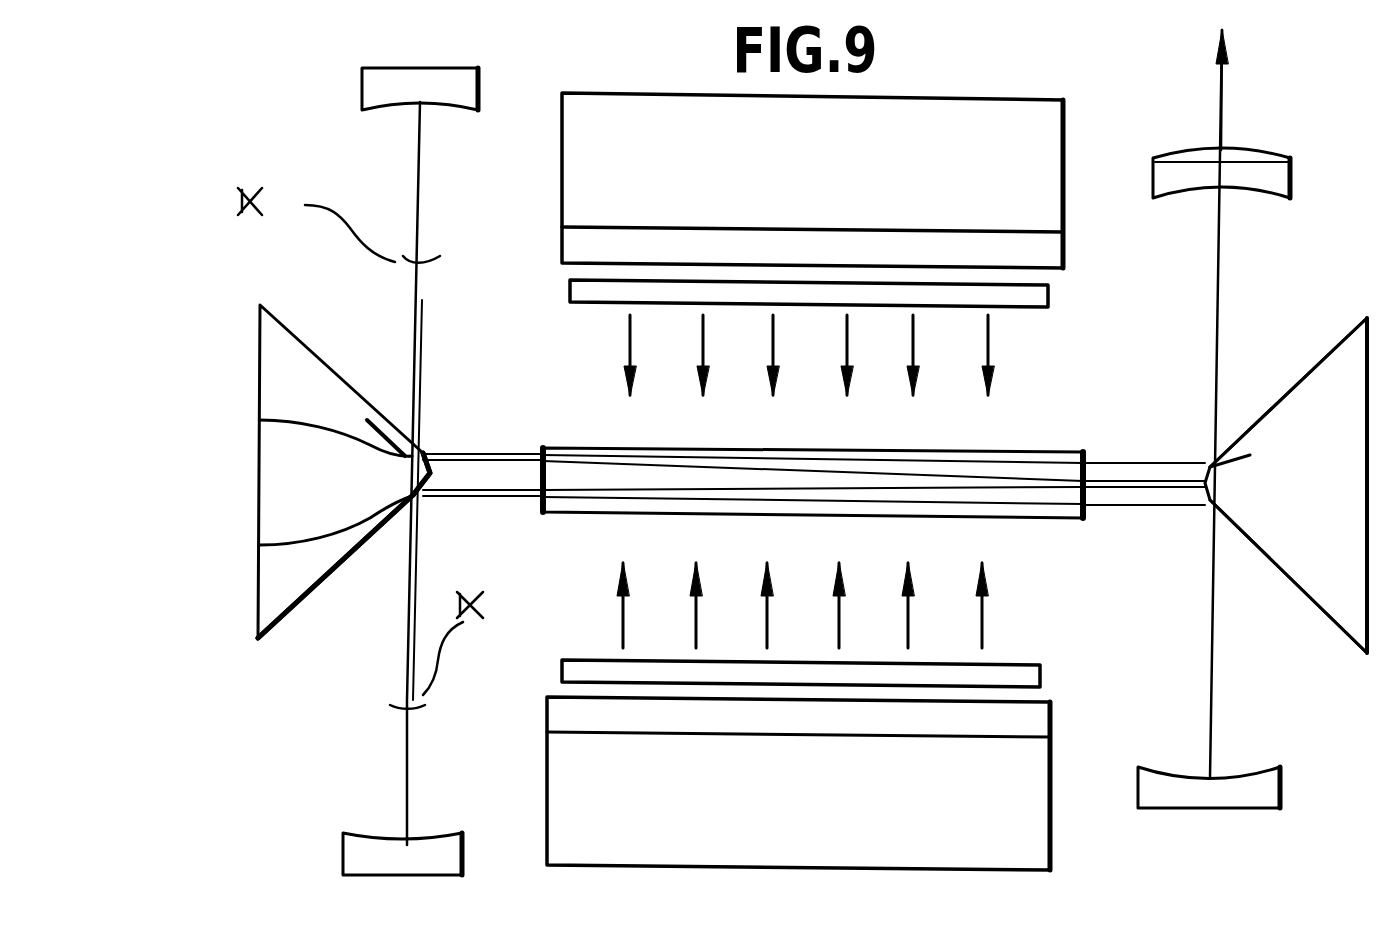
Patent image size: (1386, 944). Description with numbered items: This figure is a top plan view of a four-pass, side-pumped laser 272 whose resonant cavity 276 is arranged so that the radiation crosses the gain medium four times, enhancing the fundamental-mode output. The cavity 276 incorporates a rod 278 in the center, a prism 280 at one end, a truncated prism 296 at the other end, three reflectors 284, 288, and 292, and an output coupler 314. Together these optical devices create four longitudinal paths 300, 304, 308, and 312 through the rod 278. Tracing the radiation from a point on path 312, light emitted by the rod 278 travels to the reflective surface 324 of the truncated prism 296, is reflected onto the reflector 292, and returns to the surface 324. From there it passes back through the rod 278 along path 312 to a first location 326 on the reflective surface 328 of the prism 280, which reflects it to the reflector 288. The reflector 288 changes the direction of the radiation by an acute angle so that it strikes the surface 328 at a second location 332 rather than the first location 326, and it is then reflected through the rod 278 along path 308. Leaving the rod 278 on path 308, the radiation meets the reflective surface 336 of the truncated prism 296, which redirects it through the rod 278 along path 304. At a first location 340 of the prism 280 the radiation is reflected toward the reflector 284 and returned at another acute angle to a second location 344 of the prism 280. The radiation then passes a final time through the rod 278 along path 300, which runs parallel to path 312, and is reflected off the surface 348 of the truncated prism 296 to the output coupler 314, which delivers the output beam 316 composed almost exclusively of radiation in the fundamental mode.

The four-pass laser 272 is at (212, 138).
The resonant cavity 276 is at (373, 652).
The rod 278 is at (1018, 449).
The prism 280 is at (285, 491).
The reflector 284 is at (462, 69).
The reflector 288 is at (343, 853).
The reflector 292 is at (1232, 808).
The truncated prism 296 is at (1290, 525).
The path 300 is at (1130, 462).
The path 304 is at (503, 455).
The path 308 is at (498, 498).
The path 312 is at (1145, 508).
The output coupler 314 is at (1290, 160).
The output beam 316 is at (1218, 65).
The reflective surface 324 is at (1270, 592).
The first location 326 is at (262, 545).
The reflective surface 328 is at (292, 624).
The second location 332 is at (262, 420).
The reflective surface 336 is at (1215, 486).
The first location 340 is at (428, 455).
The second location 344 is at (367, 422).
The surface 348 is at (1284, 392).